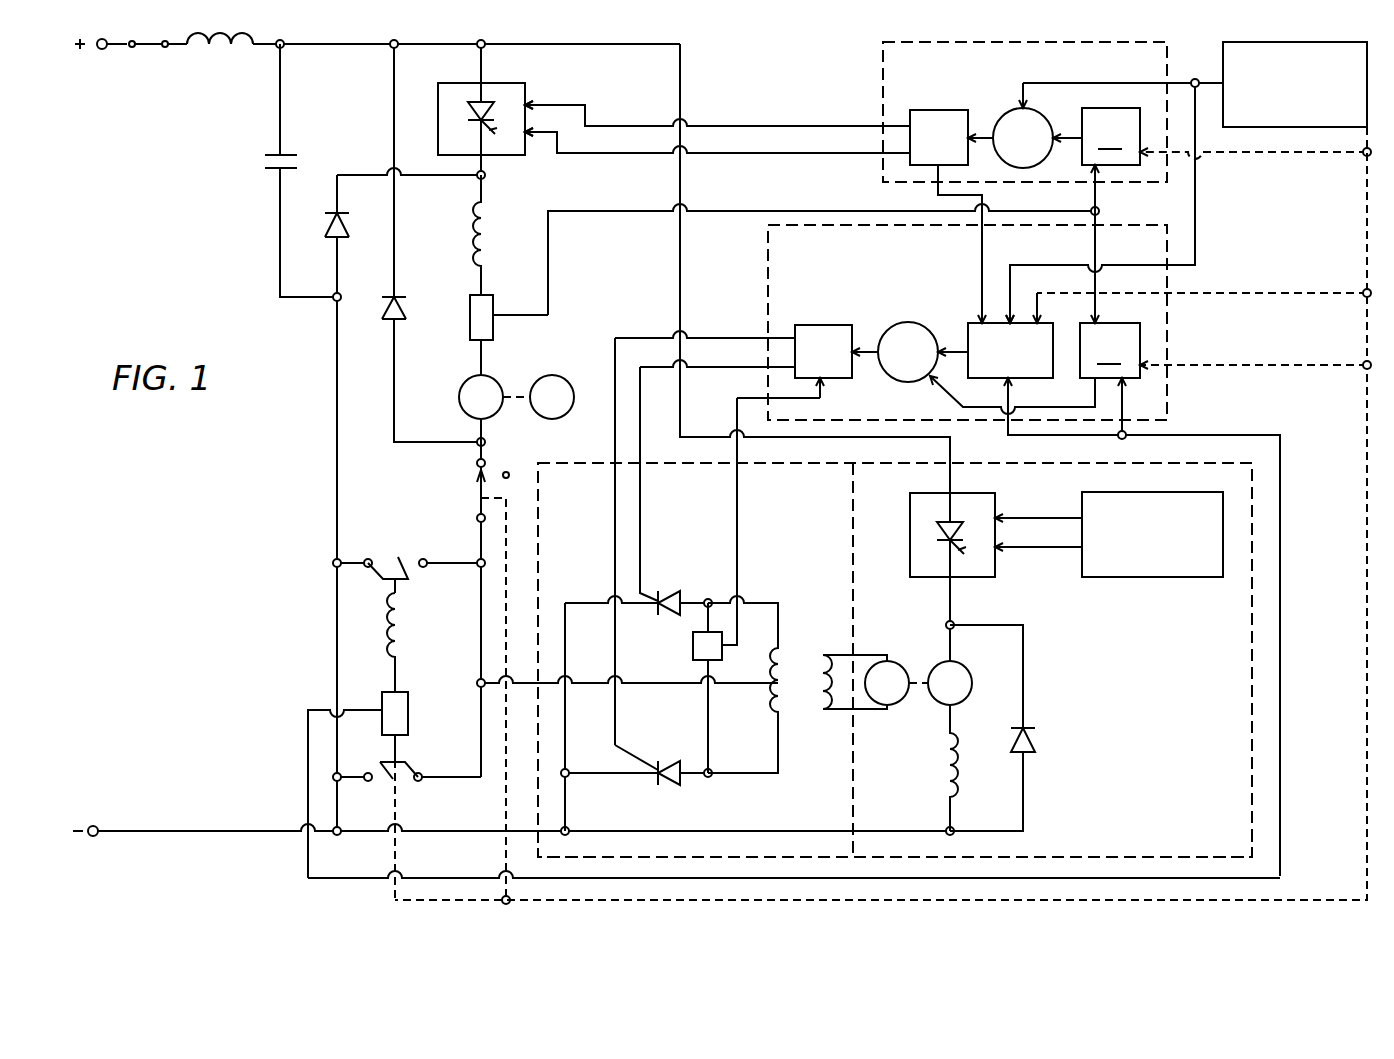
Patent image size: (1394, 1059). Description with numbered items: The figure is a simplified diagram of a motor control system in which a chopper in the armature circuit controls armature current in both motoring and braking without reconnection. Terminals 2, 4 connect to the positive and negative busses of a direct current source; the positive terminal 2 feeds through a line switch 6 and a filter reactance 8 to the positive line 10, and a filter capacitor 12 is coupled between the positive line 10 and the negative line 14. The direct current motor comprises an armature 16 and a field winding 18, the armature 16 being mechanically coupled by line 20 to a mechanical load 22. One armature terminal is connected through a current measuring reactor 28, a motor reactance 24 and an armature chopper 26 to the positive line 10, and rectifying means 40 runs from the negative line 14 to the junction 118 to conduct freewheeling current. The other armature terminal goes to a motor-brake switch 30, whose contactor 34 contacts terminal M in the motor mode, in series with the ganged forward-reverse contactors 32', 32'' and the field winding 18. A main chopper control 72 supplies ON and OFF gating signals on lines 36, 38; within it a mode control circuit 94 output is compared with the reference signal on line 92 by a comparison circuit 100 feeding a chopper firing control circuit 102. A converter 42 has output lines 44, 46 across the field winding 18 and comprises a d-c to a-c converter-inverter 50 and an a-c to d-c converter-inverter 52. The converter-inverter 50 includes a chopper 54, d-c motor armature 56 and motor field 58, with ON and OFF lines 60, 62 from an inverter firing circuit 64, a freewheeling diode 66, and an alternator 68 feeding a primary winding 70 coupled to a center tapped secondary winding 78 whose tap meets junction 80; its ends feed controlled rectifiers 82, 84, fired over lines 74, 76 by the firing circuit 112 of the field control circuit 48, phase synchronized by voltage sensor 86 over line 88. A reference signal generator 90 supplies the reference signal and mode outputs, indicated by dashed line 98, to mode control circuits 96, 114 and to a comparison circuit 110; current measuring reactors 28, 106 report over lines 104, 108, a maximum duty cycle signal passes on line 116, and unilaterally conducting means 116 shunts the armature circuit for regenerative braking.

The positive terminal 2 is at (103, 50).
The negative terminal 4 is at (103, 827).
The line switch 6 is at (143, 50).
The filter reactance 8 is at (221, 50).
The positive line 10 is at (341, 50).
The filter capacitor 12 is at (262, 157).
The negative line 14 is at (467, 830).
The armature 16 is at (458, 402).
The field winding 18 is at (405, 632).
The line 20 is at (517, 395).
The mechanical load 22 is at (566, 376).
The motor reactance 24 is at (492, 247).
The armature chopper 26 is at (528, 83).
The current measuring reactor 28 is at (465, 329).
The motor-brake switch 30 is at (462, 507).
The switch contactor 32' is at (407, 814).
The switch contactor 32'' is at (407, 561).
The contactor 34 is at (478, 515).
The ON line 36 is at (747, 125).
The OFF line 38 is at (756, 158).
The rectifying means 40 is at (325, 222).
The converter 42 is at (811, 822).
The output line 44 is at (592, 682).
The output line 46 is at (566, 810).
The field control circuit 48 is at (766, 302).
The d-c to a-c converter-inverter 50 is at (1252, 857).
The a-c to d-c converter-inverter 52 is at (538, 855).
The chopper 54 is at (910, 547).
The d-c motor armature 56 is at (970, 672).
The motor field 58 is at (935, 772).
The ON line 60 is at (1020, 552).
The OFF line 62 is at (1020, 512).
The inverter firing circuit 64 is at (1178, 579).
The freewheeling diode 66 is at (1033, 736).
The alternator 68 is at (897, 660).
The primary winding 70 is at (815, 650).
The main chopper control 72 is at (878, 177).
The line 74 is at (720, 372).
The line 76 is at (750, 338).
The secondary winding 78 is at (780, 727).
The junction 80 is at (475, 685).
The controlled rectifier 82 is at (665, 598).
The controlled rectifier 84 is at (667, 760).
The voltage sensor 86 is at (690, 650).
The line 88 is at (737, 516).
The reference signal generator 90 is at (1275, 137).
The line 92 is at (1195, 78).
The mode control circuit 94 is at (1111, 215).
The mode control circuit 96 is at (1035, 368).
The dashed line 98 is at (1360, 235).
The comparison circuit 100 is at (1005, 110).
The chopper firing control circuit 102 is at (938, 110).
The line 104 is at (625, 212).
The current measuring reactor 106 is at (408, 694).
The line 108 is at (333, 878).
The comparison circuit 110 is at (910, 322).
The firing circuit 112 is at (820, 323).
The mode control circuit 114 is at (955, 322).
The unilaterally conducting means 116 is at (406, 302).
The junction 118 is at (492, 175).